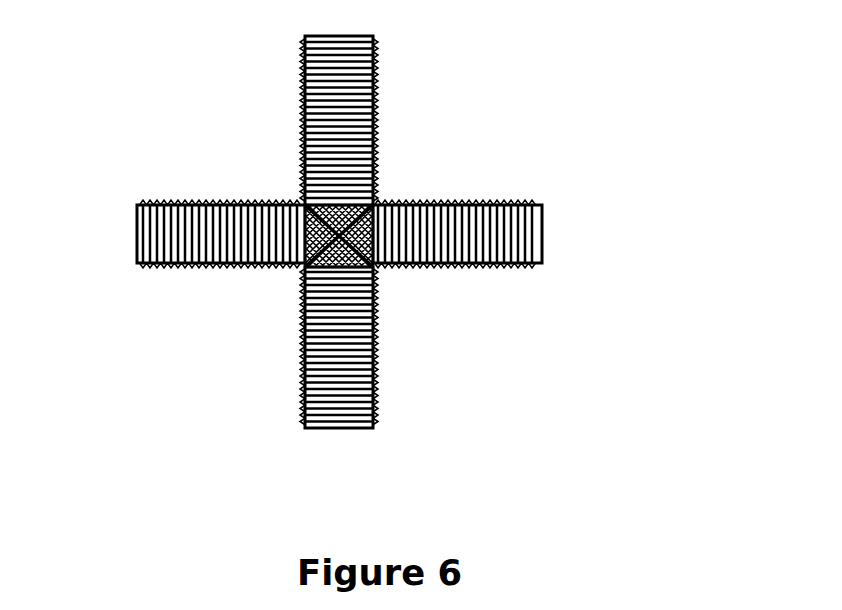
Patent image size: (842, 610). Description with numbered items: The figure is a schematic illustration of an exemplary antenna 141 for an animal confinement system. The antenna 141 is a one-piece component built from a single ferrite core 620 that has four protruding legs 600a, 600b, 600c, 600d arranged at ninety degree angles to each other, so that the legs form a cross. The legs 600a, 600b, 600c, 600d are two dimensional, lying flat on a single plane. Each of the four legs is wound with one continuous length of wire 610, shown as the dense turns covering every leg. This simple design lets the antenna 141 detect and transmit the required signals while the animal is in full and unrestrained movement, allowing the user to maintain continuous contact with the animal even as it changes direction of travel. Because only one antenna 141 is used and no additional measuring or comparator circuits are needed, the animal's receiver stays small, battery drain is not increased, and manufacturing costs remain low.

The antenna 141 is at (641, 7).
The protruding leg 600a is at (542, 227).
The protruding leg 600b is at (333, 430).
The protruding leg 600c is at (137, 238).
The protruding leg 600d is at (305, 42).
The wire 610 is at (378, 349).
The ferrite core 620 is at (300, 156).